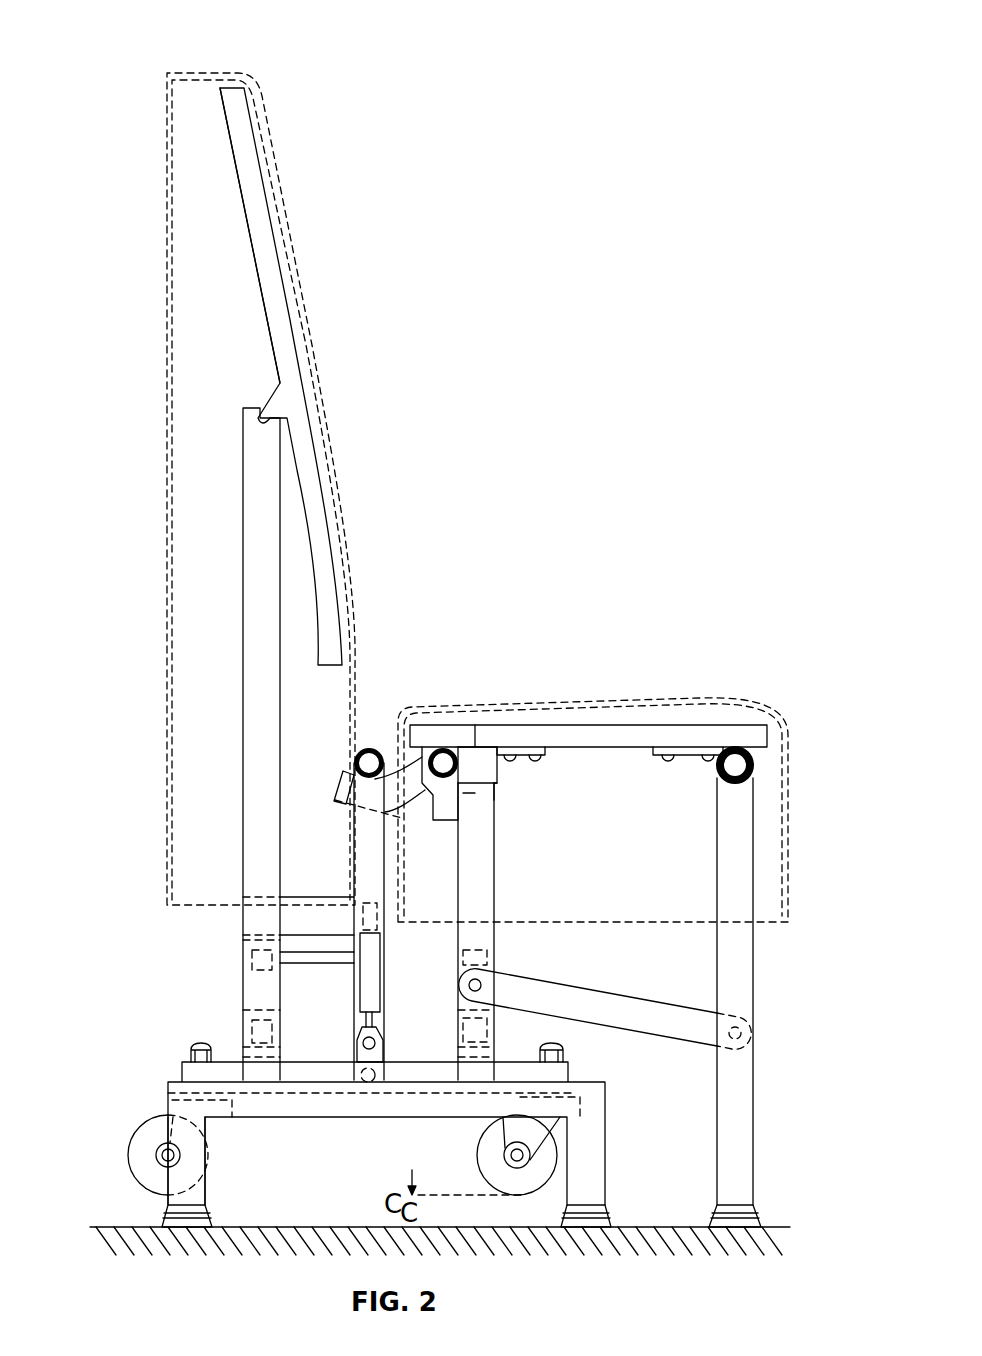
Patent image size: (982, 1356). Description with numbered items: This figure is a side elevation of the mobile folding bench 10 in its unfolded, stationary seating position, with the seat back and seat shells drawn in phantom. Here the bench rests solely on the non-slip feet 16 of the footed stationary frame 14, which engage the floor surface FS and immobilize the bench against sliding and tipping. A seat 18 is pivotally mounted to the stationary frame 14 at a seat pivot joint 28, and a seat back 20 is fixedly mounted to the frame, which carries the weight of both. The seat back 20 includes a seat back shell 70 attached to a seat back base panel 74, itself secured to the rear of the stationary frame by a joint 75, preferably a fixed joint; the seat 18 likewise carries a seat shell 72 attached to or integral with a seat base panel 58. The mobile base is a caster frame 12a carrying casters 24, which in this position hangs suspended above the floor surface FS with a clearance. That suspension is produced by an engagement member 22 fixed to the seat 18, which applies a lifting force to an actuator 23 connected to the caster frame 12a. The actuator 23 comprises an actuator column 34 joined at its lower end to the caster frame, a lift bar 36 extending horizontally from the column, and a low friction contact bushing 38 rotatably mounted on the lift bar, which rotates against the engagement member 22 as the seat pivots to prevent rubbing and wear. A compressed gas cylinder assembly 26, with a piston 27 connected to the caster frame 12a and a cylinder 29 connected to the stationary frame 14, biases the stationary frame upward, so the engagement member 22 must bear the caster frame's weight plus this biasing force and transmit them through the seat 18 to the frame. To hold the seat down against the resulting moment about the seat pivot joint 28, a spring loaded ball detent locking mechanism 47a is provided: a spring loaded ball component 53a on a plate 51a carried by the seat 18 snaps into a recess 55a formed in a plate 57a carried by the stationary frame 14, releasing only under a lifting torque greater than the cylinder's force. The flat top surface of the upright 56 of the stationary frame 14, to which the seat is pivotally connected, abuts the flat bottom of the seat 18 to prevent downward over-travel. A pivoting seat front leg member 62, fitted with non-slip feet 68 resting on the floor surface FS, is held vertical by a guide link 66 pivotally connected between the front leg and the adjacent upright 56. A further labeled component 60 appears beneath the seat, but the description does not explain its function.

The mobile folding bench 10 is at (610, 79).
The caster frame 12a is at (230, 1053).
The footed stationary frame 14 is at (605, 1147).
The non-slip feet 16 is at (163, 1215).
The seat 18 is at (716, 695).
The seat back 20 is at (199, 66).
The engagement member 22 is at (335, 783).
The actuator 23 is at (345, 848).
The casters 24 is at (142, 1130).
The cylinder assembly 26 is at (393, 976).
The piston 27 is at (360, 1022).
The seat pivot joint 28 is at (445, 760).
The cylinder 29 is at (370, 997).
The actuator column 34 is at (352, 895).
The lift bar 36 is at (373, 752).
The low friction contact bushing 38 is at (362, 751).
The spring loaded ball detent locking mechanism 47a is at (478, 795).
The plate 51a is at (410, 755).
The spring loaded ball component 53a is at (466, 793).
The recess 55a is at (564, 820).
The upright 56 is at (497, 855).
The plate 57a is at (447, 822).
The seat base panel 58 is at (614, 755).
The clip 60 is at (517, 762).
The seat front leg member 62 is at (754, 985).
The guide links 66 is at (605, 1005).
The non-slip feet 68 is at (760, 1210).
The seat back shell 70 is at (290, 233).
The seat shell 72 is at (620, 697).
The seat back base panel 74 is at (257, 215).
The joint 75 is at (262, 420).
The floor surface FS is at (110, 1225).